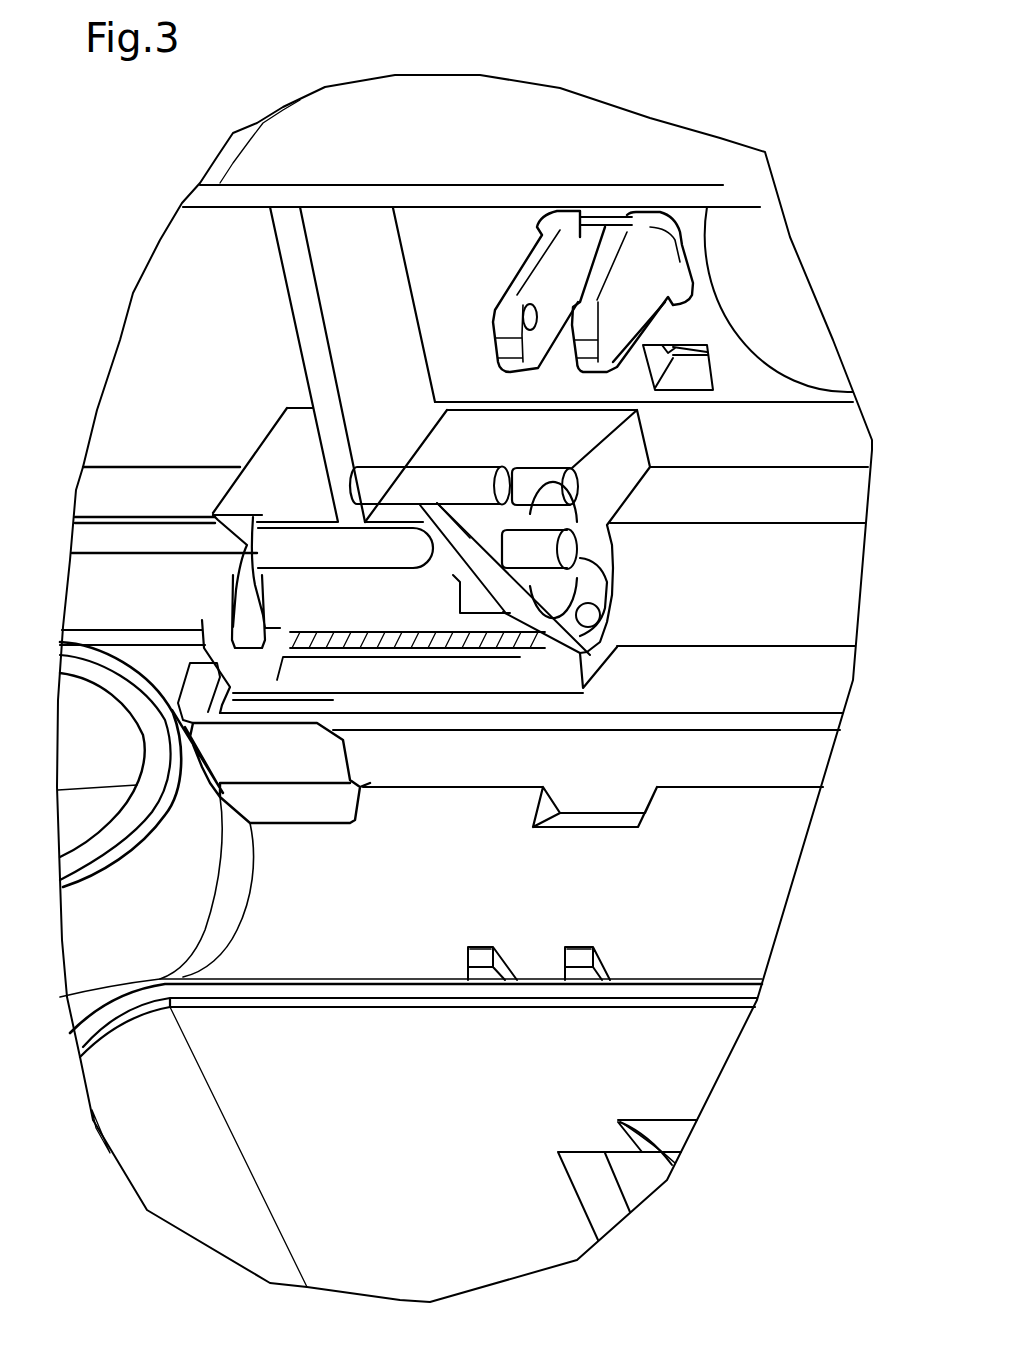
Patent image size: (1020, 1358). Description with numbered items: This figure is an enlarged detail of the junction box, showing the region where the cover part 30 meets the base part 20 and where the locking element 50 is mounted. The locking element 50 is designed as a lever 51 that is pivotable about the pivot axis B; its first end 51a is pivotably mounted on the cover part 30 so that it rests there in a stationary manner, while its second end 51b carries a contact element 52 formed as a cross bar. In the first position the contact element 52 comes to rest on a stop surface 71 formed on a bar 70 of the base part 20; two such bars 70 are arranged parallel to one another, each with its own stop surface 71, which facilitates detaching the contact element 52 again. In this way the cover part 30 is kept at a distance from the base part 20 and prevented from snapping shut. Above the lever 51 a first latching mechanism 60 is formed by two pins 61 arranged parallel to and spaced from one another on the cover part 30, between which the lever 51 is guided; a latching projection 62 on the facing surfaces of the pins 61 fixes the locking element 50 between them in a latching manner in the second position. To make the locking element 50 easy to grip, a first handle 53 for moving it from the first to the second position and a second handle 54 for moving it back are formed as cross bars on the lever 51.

The base part 20 is at (748, 877).
The cover part 30 is at (805, 435).
The locking element 50 is at (562, 578).
The lever 51 is at (502, 570).
The first end 51a is at (597, 612).
The second end 51b is at (433, 508).
The contact element 52 is at (397, 480).
The first handle 53 is at (548, 488).
The second handle 54 is at (548, 555).
The first latching mechanism 60 is at (580, 273).
The pins 61 is at (592, 248).
The latching projection 62 is at (530, 317).
The bar 70 is at (597, 975).
The stop surface 71 is at (602, 960).
The pivot axis B is at (588, 600).